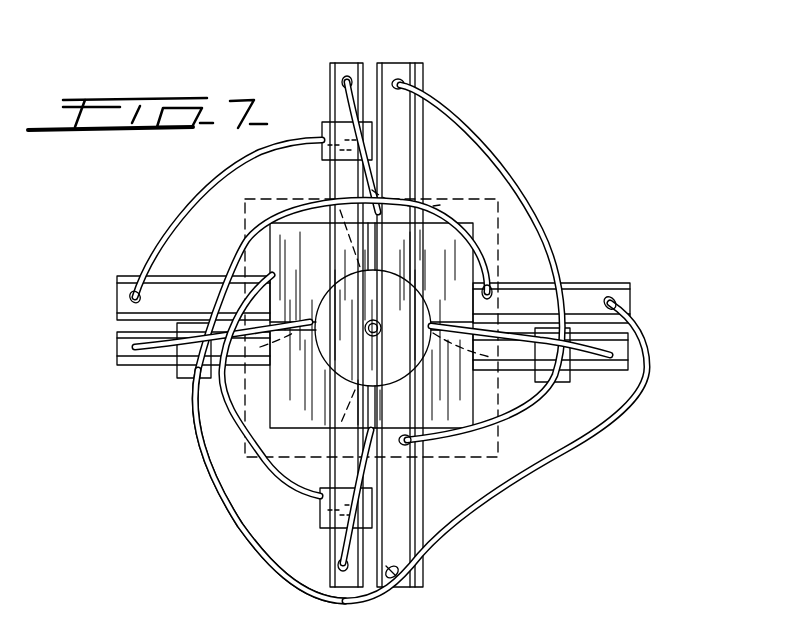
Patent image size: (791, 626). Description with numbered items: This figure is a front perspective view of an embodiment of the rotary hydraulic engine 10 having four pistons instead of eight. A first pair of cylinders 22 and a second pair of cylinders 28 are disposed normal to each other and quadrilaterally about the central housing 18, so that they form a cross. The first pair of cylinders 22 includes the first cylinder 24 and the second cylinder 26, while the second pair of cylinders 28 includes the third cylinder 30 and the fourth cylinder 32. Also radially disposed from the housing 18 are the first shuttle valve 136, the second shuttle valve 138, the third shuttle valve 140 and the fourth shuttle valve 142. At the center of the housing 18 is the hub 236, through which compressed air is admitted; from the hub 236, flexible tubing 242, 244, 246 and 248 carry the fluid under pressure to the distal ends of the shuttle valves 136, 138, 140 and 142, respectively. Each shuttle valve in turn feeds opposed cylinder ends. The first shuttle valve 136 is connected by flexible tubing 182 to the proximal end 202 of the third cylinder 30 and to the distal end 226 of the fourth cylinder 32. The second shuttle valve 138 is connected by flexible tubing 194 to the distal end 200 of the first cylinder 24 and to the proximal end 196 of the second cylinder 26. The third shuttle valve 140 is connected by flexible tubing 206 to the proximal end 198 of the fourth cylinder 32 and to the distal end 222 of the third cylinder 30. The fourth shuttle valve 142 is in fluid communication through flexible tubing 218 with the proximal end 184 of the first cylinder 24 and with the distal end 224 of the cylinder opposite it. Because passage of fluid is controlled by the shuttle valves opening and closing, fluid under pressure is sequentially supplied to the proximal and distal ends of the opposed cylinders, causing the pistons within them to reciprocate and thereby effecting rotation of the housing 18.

The rotary hydraulic engine 10 is at (575, 138).
The housing 18 is at (466, 240).
The first pair of cylinders 22 is at (388, 50).
The first cylinder 24 is at (420, 64).
The second cylinder 26 is at (418, 580).
The second pair of cylinders 28 is at (648, 293).
The third cylinder 30 is at (622, 283).
The fourth cylinder 32 is at (125, 281).
The first shuttle valve 136 is at (346, 63).
The second shuttle valve 138 is at (618, 362).
The third shuttle valve 140 is at (340, 578).
The fourth shuttle valve 142 is at (122, 355).
The flexible tubing 182 is at (238, 175).
The proximal end of first cylinder 184 is at (414, 203).
The flexible tubing 194 is at (538, 170).
The proximal end of second cylinder 196 is at (424, 432).
The proximal end of fourth cylinder 198 is at (262, 283).
The distal end of first cylinder 200 is at (412, 66).
The proximal end of third cylinder 202 is at (489, 287).
The flexible tubing 206 is at (240, 463).
The flexible tubing 218 is at (290, 205).
The distal end of third cylinder 222 is at (620, 305).
The distal end of cylinder 224 is at (392, 578).
The distal end of fourth cylinder 226 is at (134, 284).
The hub 236 is at (368, 335).
The flexible tubing 242 is at (370, 128).
The flexible tubing 244 is at (582, 345).
The flexible tubing 246 is at (322, 486).
The flexible tubing 248 is at (230, 372).